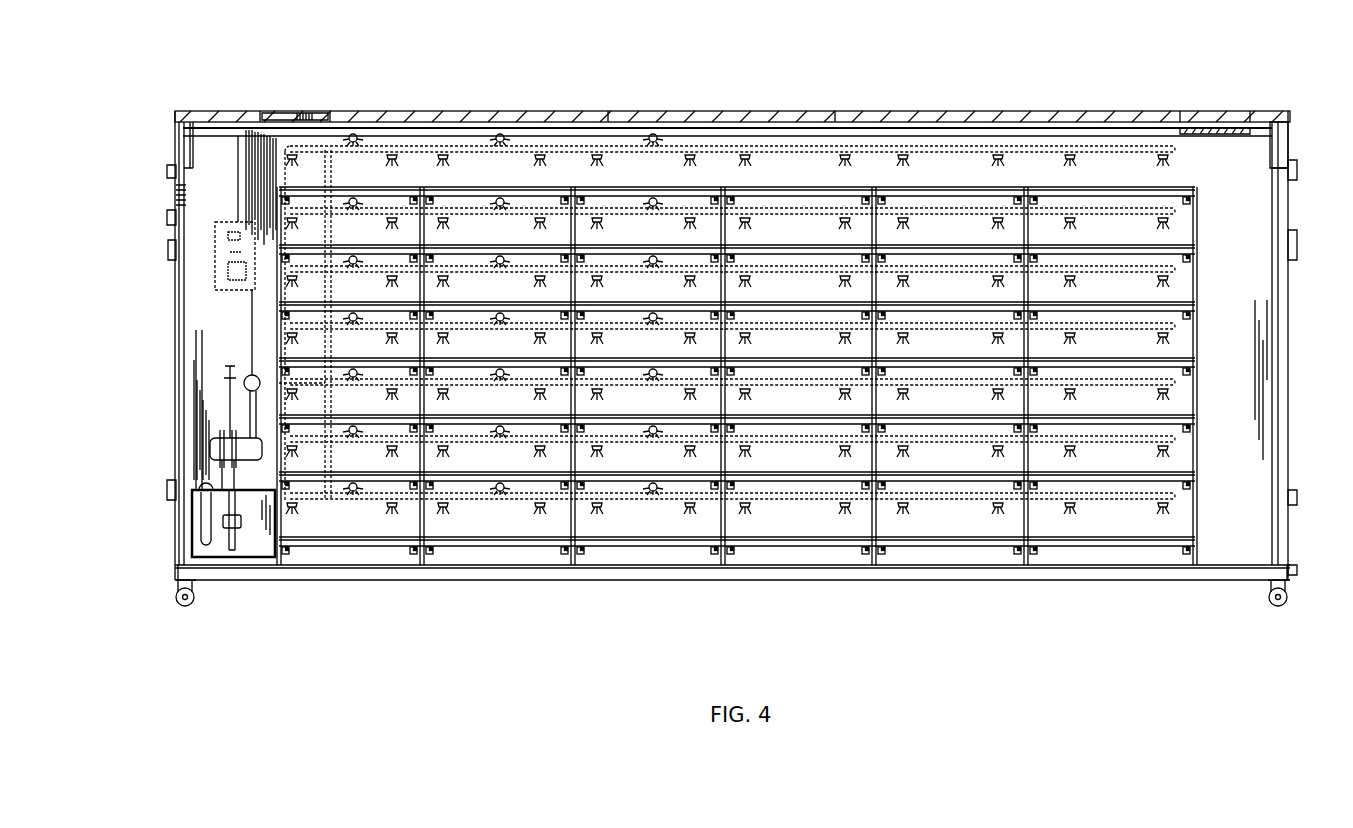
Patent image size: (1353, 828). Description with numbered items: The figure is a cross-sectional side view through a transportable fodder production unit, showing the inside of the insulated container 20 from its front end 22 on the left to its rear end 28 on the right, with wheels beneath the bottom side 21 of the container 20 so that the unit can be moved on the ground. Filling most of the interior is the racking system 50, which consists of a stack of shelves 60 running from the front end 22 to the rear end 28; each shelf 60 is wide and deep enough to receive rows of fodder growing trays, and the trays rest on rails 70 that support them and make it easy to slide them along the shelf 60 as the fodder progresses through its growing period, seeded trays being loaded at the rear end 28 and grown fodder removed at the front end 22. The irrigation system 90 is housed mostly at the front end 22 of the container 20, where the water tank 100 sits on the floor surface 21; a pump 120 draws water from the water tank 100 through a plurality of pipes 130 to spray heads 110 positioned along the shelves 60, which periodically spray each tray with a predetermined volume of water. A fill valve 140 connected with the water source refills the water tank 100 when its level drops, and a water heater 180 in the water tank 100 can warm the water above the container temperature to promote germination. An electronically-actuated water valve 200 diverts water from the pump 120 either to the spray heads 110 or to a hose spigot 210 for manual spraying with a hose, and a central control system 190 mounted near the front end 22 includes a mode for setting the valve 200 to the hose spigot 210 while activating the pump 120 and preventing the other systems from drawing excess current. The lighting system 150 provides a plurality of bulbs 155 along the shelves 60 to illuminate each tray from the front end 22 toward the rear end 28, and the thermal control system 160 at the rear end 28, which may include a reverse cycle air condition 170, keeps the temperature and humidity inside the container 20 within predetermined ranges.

The insulated container 20 is at (762, 111).
The bottom side 21 is at (960, 548).
The front end 22 is at (176, 125).
The rear end 28 is at (1282, 142).
The racking system 50 is at (372, 168).
The shelves 60 is at (713, 204).
The rails 70 is at (850, 187).
The irrigation system 90 is at (188, 440).
The water tank 100 is at (240, 492).
The spray heads 110 is at (1070, 158).
The pump 120 is at (214, 440).
The pipes 130 is at (330, 173).
The fill valve 140 is at (258, 557).
The lighting system 150 is at (527, 140).
The bulbs 155 is at (650, 133).
The thermal control system 160 is at (1226, 98).
The reverse cycle air condition 170 is at (1250, 135).
The water heater 180 is at (205, 500).
The central control system 190 is at (232, 222).
The electronically-actuated water valve 200 is at (252, 375).
The hose spigot 210 is at (228, 370).